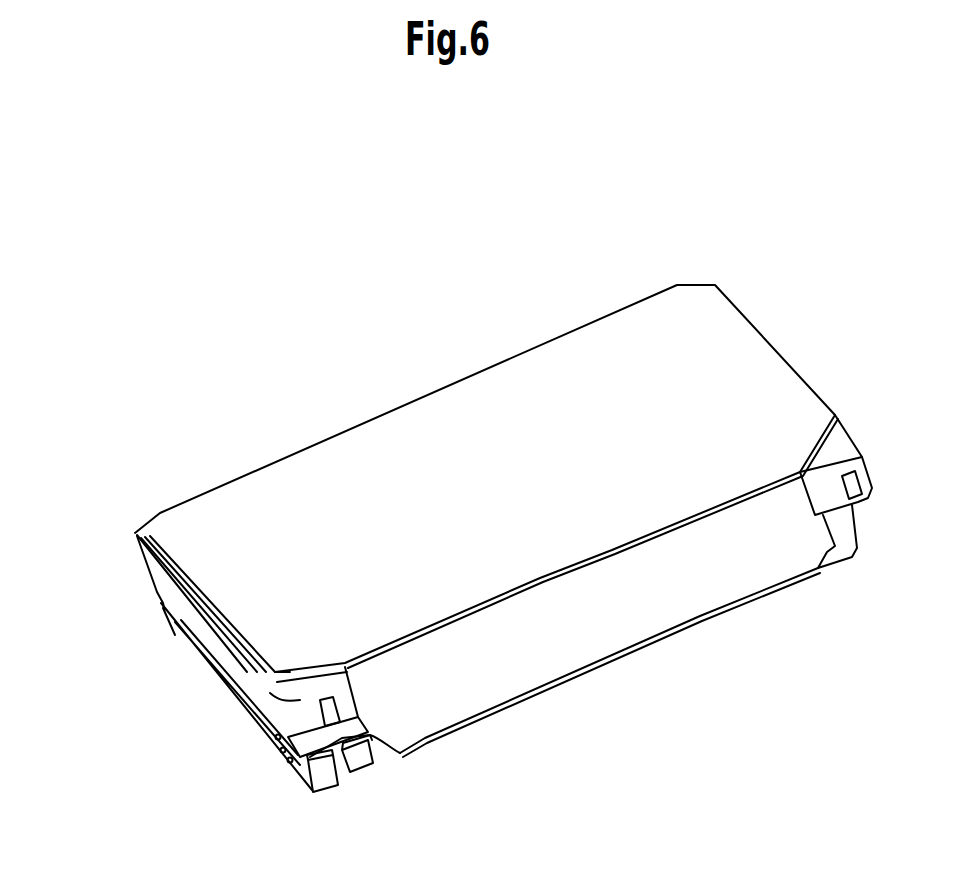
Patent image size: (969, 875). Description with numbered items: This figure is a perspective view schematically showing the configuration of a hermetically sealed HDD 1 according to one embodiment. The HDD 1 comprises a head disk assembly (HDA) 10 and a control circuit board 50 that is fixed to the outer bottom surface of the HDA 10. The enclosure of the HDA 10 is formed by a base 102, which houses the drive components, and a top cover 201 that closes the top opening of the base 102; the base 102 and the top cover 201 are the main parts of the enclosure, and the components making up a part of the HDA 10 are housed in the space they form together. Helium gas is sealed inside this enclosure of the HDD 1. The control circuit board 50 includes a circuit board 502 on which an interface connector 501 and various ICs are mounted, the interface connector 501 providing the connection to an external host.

The HDD 1 is at (272, 271).
The head disk assembly 10 is at (342, 411).
The base 102 is at (693, 590).
The top cover 201 is at (237, 577).
The control circuit board 50 is at (547, 726).
The interface connector 501 is at (330, 792).
The circuit board 502 is at (450, 735).